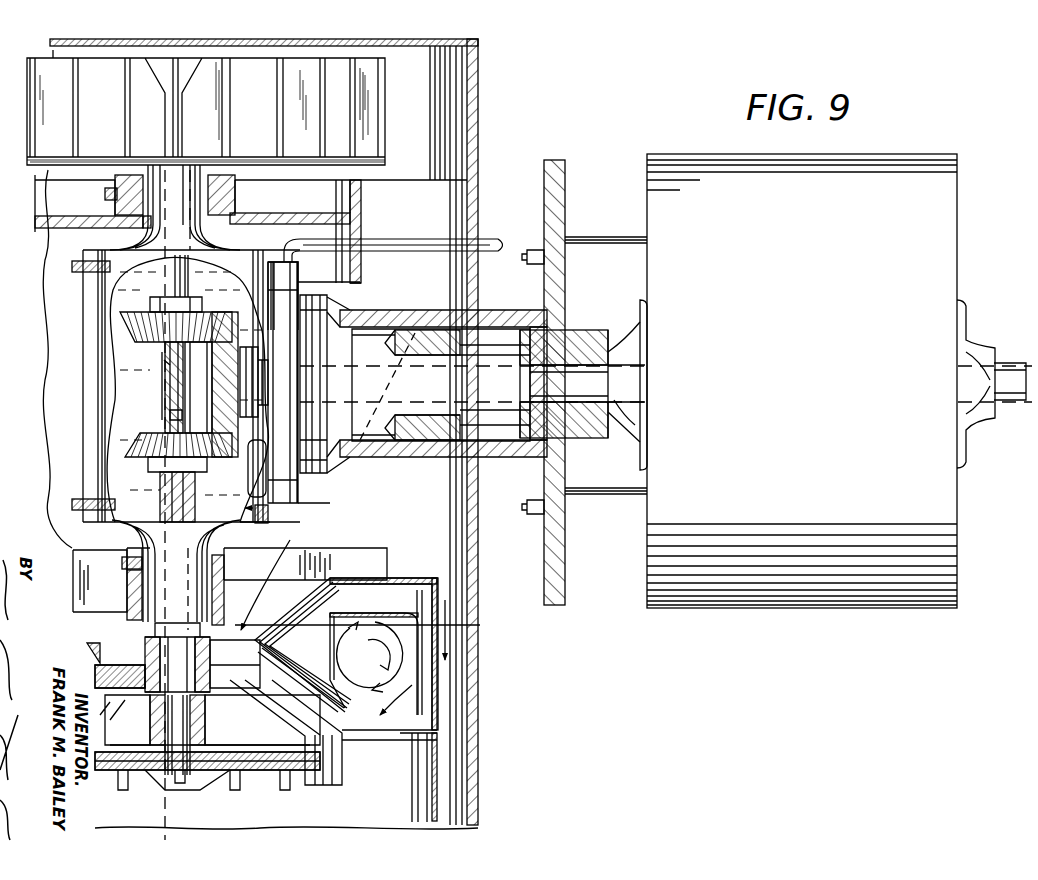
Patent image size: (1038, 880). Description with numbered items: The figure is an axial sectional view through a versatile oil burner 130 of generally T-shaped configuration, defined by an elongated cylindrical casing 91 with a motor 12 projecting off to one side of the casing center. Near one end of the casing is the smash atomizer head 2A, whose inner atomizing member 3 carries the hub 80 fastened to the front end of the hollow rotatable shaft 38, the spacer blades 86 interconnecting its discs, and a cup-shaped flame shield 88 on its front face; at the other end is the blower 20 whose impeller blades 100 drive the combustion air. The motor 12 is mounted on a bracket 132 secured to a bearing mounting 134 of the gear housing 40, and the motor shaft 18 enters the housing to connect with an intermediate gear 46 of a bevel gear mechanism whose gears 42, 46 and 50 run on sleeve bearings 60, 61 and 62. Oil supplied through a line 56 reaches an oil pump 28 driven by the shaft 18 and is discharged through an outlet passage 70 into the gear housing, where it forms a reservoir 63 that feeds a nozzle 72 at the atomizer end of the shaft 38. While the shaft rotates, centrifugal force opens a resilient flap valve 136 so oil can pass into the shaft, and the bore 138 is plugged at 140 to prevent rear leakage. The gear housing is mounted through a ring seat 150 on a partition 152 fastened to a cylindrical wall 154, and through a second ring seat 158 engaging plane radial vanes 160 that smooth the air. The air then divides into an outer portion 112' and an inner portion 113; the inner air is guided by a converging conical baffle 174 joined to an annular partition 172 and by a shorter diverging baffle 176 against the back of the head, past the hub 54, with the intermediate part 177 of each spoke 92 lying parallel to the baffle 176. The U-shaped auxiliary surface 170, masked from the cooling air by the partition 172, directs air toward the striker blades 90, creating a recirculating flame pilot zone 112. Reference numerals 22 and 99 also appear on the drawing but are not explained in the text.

The smash atomizer head 2A is at (145, 800).
The inner atomizing member 3 is at (250, 780).
The motor 12 is at (818, 367).
The motor shaft 18 is at (565, 380).
The blower 20 is at (380, 73).
The mounting bolts 22 is at (532, 264).
The oil pump 28 is at (302, 485).
The hollow rotatable shaft 38 is at (170, 280).
The gear housing 40 is at (90, 322).
The bevel gear 42 is at (212, 312).
The intermediate gear 46 is at (220, 370).
The bevel gear 50 is at (130, 441).
The hub 54 is at (148, 642).
The oil supply line 56 is at (505, 245).
The sleeve bearing 60 is at (205, 232).
The sleeve bearing 61 is at (260, 366).
The sleeve bearing 62 is at (142, 541).
The oil reservoir 63 is at (147, 405).
The outlet passage 70 is at (280, 518).
The nozzle 72 is at (185, 778).
The hub 80 is at (152, 722).
The spacer blades 86 is at (305, 772).
The flame shield 88 is at (172, 790).
The striker blades 90 is at (338, 772).
The cylindrical casing 91 is at (478, 707).
The spokes 92 is at (126, 674).
The drum bottom band 99 is at (382, 158).
The impeller blades 100 is at (372, 58).
The flame pilot zone 112 is at (374, 668).
The outer concentric air portion 112' is at (486, 630).
The inner concentric air portion 113 is at (270, 546).
The oil burner 130 is at (955, 130).
The bracket 132 is at (546, 566).
The bearing mounting 134 is at (485, 455).
The resilient flap valve 136 is at (162, 362).
The shaft bore 138 is at (172, 414).
The plug 140 is at (172, 352).
The ring seat 150 is at (112, 200).
The partition 152 is at (268, 214).
The cylindrical wall 154 is at (362, 206).
The second ring seat 158 is at (228, 580).
The radial vanes 160 is at (355, 547).
The auxiliary surface 170 is at (412, 590).
The annular partition 172 is at (400, 578).
The converging conical baffle 174 is at (325, 606).
The diverging conical baffle 176 is at (292, 620).
The intermediate spoke part 177 is at (288, 672).